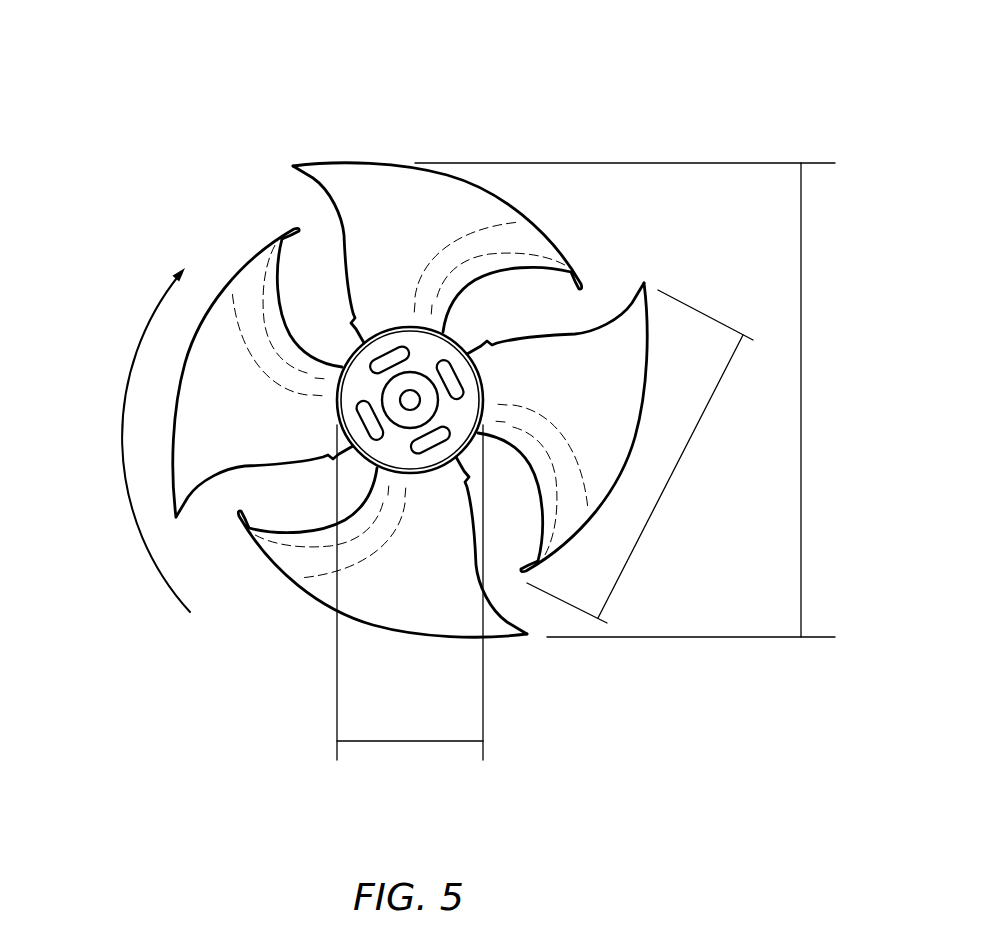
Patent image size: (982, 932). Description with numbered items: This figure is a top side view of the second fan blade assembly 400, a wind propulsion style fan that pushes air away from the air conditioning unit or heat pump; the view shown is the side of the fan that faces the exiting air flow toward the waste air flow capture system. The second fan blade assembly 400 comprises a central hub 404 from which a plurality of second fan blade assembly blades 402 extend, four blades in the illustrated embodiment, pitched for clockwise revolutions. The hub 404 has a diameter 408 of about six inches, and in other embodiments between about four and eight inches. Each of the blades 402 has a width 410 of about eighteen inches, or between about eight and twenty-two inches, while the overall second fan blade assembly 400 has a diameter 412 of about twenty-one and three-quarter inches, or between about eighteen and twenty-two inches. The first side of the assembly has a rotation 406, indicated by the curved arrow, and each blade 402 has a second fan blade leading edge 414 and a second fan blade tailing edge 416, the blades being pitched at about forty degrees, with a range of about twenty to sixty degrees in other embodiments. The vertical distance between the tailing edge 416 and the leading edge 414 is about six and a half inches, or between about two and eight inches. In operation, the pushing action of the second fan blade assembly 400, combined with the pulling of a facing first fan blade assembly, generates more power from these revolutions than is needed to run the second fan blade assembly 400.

The second fan blade assembly 400 is at (194, 112).
The second fan blade assembly blades 402 is at (248, 275).
The hub 404 is at (408, 402).
The rotation 406 is at (123, 400).
The diameter 408 is at (409, 741).
The width 410 is at (683, 453).
The diameter 412 is at (801, 384).
The second fan blade leading edge 414 is at (585, 283).
The second fan blade tailing edge 416 is at (293, 166).